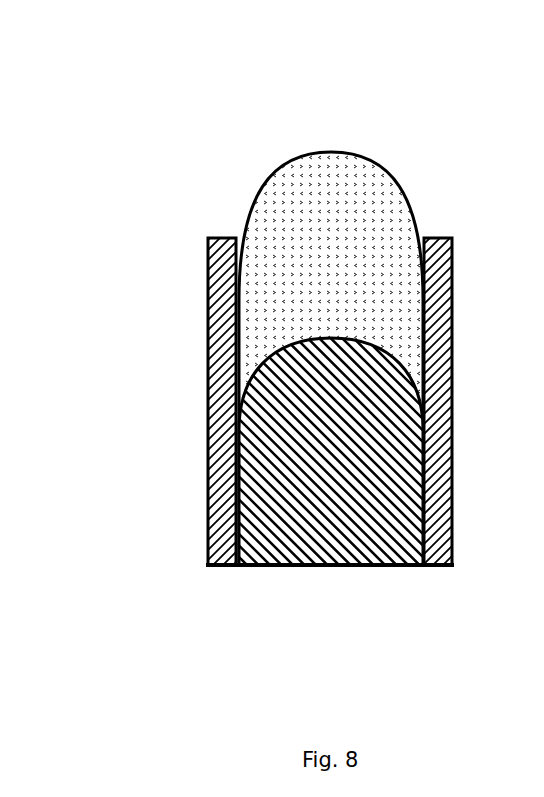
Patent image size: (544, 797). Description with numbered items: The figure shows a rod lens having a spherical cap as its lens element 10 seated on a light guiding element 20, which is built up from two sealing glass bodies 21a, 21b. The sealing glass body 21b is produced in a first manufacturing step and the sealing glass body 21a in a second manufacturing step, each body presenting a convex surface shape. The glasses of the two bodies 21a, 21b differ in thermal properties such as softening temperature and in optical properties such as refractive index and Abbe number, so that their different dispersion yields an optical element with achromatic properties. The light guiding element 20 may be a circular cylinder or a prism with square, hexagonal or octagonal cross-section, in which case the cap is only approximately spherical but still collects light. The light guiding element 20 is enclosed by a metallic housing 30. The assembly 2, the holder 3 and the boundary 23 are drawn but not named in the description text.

The device 2 is at (538, 544).
The housing 3 is at (272, 400).
The projectile body 10 is at (389, 303).
The base 20 is at (295, 582).
The upper portion 21a is at (387, 330).
The lower portion 21b is at (272, 455).
The interface 23 is at (243, 388).
The side wall 30 is at (206, 287).